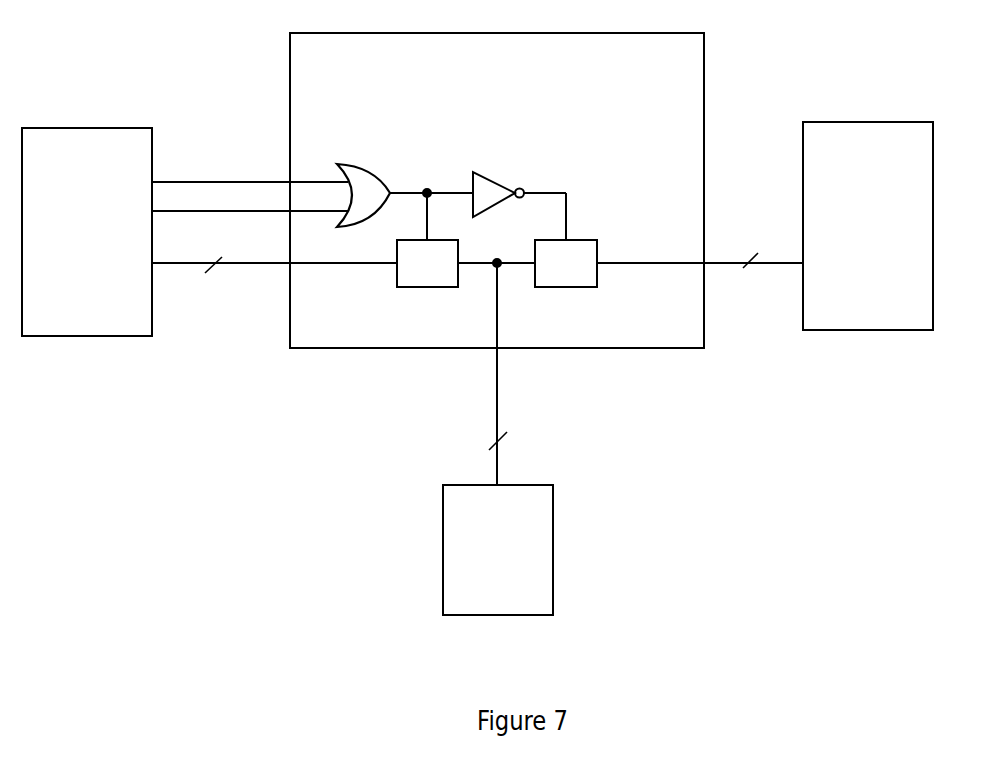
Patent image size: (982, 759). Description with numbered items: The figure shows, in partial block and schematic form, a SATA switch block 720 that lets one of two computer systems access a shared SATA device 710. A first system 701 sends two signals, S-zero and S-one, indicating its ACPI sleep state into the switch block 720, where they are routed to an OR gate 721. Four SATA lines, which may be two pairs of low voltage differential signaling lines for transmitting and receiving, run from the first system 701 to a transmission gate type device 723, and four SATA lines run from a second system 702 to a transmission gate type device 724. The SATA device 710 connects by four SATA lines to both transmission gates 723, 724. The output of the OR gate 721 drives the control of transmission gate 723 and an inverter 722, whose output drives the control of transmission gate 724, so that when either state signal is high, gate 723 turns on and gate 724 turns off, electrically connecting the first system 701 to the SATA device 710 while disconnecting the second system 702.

The system no. 1 701 is at (137, 311).
The system no. 2 702 is at (917, 303).
The SATA device 710 is at (536, 607).
The SATA switch block 720 is at (690, 335).
The OR gate 721 is at (405, 191).
The inverter 722 is at (519, 191).
The transmission gate type device 723 is at (427, 277).
The transmission gate type device 724 is at (566, 277).